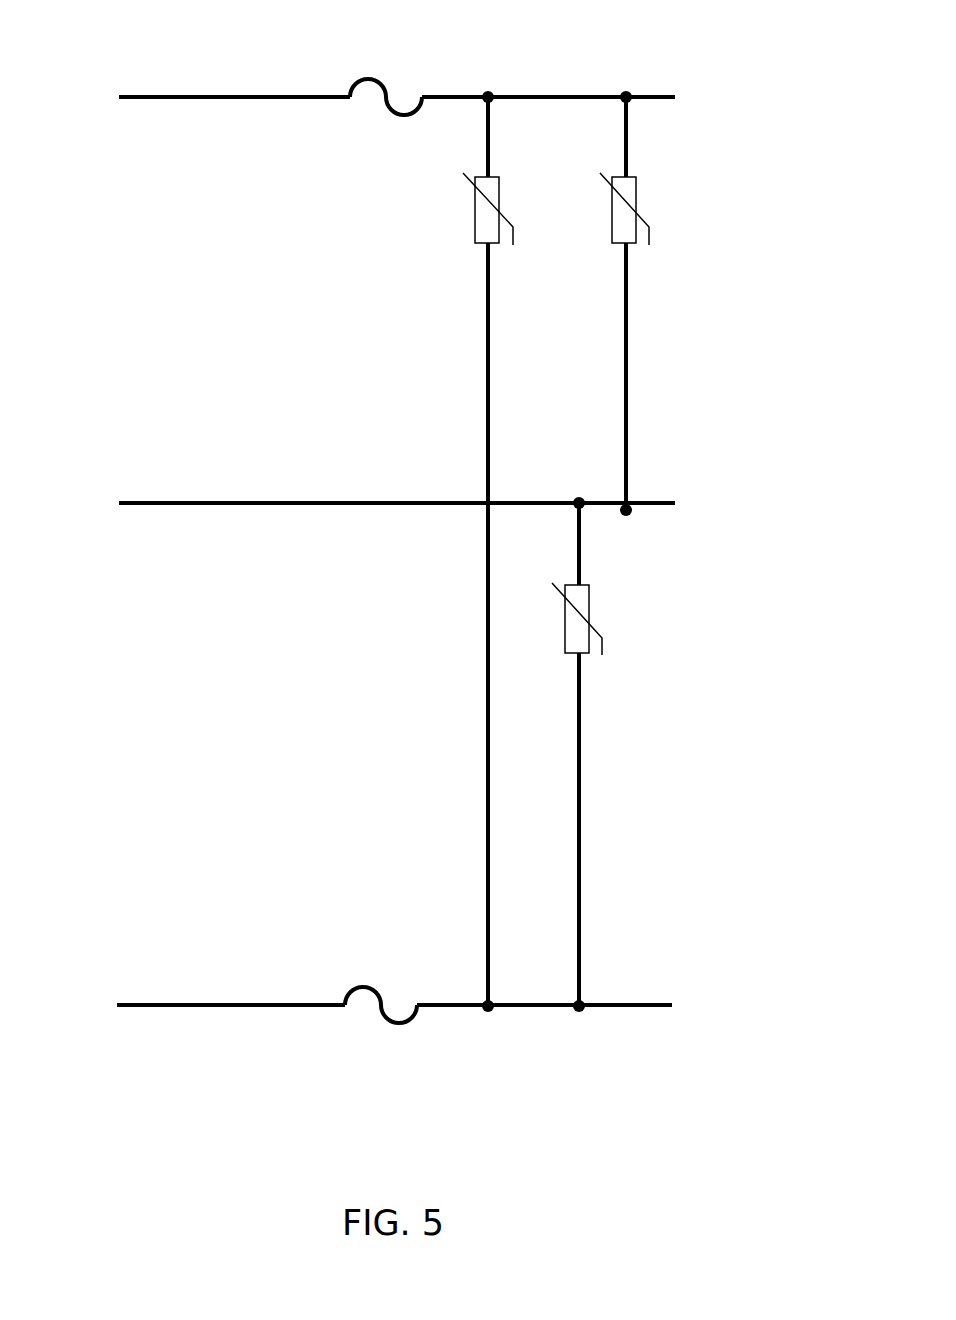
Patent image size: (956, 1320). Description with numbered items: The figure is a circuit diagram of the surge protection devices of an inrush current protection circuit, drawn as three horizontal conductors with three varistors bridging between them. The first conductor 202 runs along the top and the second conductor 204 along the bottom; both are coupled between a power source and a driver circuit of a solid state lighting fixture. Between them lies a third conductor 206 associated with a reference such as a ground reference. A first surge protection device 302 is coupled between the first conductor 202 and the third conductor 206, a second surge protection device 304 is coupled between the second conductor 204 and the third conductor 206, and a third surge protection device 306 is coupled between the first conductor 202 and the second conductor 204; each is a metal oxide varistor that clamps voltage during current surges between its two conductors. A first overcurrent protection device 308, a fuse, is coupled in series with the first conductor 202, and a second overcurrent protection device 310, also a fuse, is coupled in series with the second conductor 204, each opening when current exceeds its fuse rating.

The first conductor 202 is at (197, 86).
The second conductor 204 is at (196, 990).
The third conductor 206 is at (250, 492).
The first surge protection device 302 is at (665, 208).
The second surge protection device 304 is at (630, 645).
The third surge protection device 306 is at (450, 206).
The first overcurrent protection device 308 is at (388, 68).
The second overcurrent protection device 310 is at (355, 965).